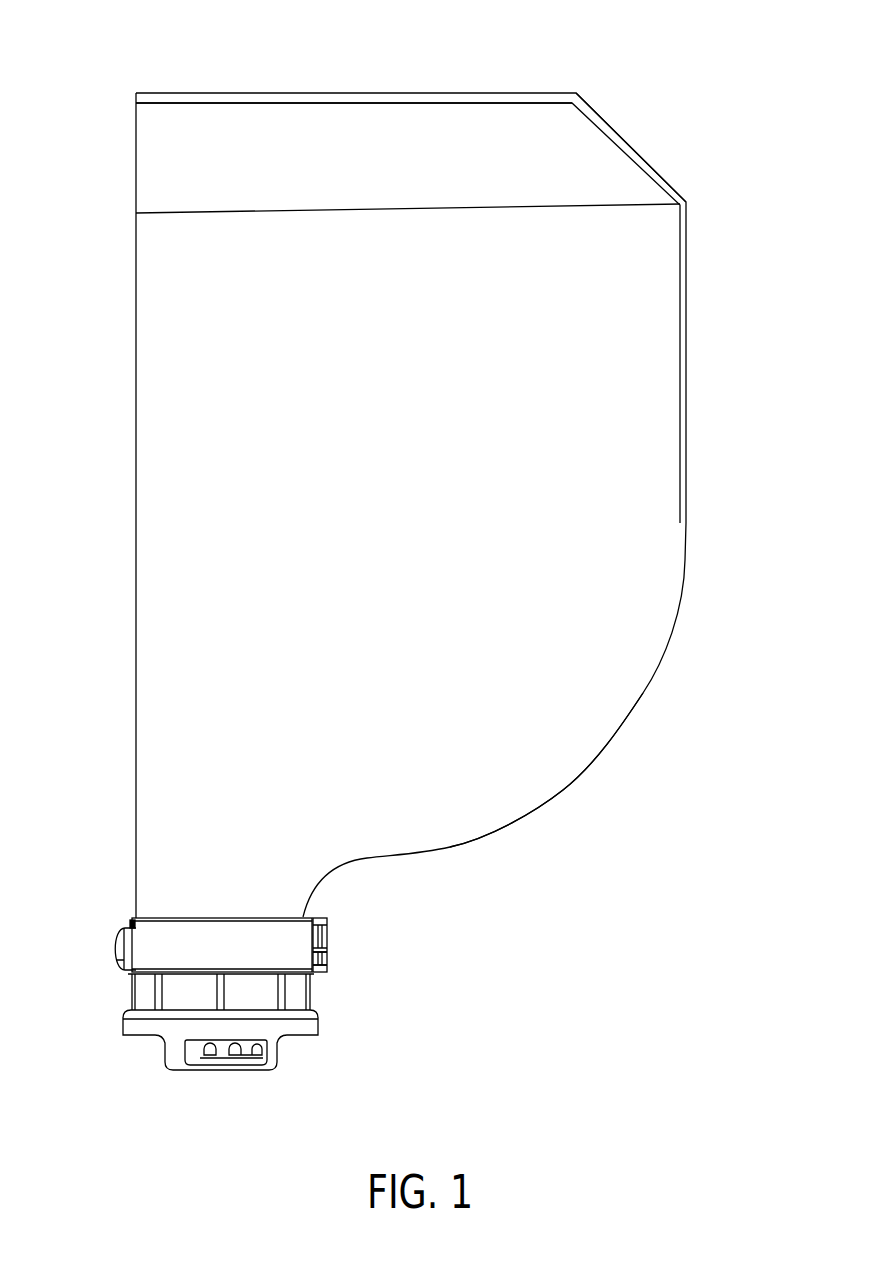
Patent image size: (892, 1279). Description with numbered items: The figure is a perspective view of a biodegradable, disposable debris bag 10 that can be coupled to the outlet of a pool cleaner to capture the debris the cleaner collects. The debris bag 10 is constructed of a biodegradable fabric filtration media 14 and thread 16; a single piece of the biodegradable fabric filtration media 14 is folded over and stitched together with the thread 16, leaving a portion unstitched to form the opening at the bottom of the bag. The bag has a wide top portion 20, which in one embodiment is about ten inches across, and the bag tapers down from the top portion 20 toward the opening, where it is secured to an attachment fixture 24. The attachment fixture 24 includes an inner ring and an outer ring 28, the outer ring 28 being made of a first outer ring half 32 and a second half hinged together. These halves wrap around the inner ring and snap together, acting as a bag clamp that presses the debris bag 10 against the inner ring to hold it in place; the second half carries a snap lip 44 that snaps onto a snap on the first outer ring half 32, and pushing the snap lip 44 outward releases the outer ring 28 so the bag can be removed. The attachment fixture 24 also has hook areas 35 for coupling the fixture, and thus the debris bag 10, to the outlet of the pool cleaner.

The debris bag 10 is at (735, 240).
The biodegradable fabric filtration media 14 is at (532, 692).
The thread 16 is at (237, 93).
The top portion 20 is at (433, 148).
The attachment fixture 24 is at (234, 1031).
The outer ring 28 is at (155, 943).
The first outer ring half 32 is at (285, 945).
The hook areas 35 is at (223, 1055).
The snap lip 44 is at (327, 958).